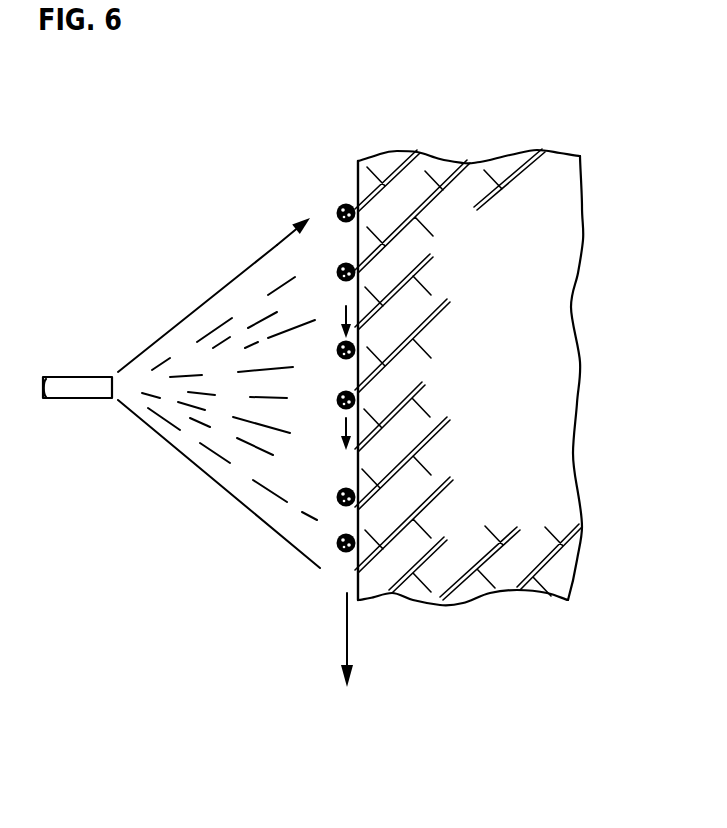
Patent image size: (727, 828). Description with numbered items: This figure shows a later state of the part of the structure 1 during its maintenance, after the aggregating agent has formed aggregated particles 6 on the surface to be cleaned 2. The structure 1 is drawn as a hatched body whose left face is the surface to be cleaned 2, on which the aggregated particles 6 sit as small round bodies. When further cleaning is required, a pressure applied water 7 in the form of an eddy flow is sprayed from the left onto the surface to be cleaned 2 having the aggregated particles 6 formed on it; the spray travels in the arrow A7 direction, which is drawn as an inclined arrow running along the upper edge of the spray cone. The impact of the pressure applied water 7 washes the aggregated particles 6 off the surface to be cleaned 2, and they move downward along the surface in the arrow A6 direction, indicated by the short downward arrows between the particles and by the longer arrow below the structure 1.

The structure 1 is at (445, 278).
The surface to be cleaned 2 is at (357, 185).
The aggregated particles 6 is at (337, 272).
The pressure applied water 7 is at (188, 316).
The arrow A7 direction A7 is at (277, 247).
The arrow A6 direction A6 is at (337, 310).